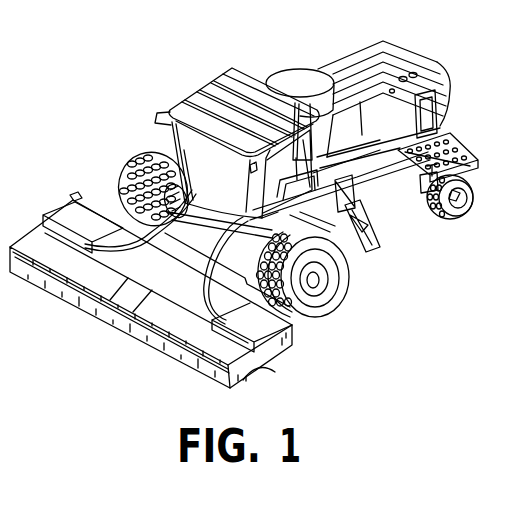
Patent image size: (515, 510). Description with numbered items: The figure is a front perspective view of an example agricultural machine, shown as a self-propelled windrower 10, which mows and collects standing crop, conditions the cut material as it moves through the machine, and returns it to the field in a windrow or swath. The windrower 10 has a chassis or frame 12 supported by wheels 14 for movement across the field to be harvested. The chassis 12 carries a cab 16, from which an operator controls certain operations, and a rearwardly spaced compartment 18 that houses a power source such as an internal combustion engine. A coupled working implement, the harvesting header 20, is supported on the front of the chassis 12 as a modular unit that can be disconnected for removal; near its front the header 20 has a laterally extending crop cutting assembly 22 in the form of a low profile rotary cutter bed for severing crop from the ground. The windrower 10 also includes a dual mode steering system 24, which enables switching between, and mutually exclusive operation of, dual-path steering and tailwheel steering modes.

The self-propelled windrower 10 is at (128, 125).
The chassis or frame 12 is at (376, 158).
The wheels 14 is at (130, 172).
The cab 16 is at (208, 78).
The rearwardly spaced compartment 18 is at (431, 71).
The harvesting header 20 is at (292, 347).
The crop cutting assembly 22 is at (256, 370).
The dual mode steering system 24 is at (378, 218).